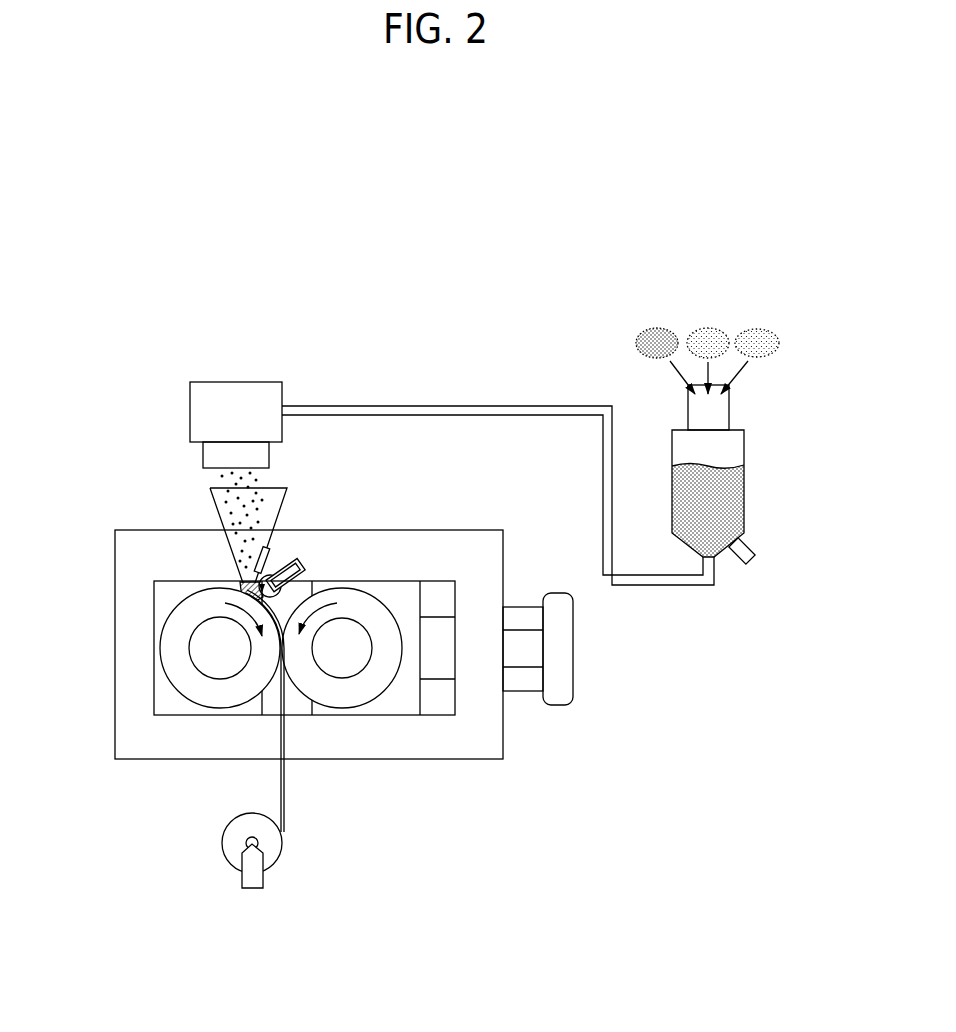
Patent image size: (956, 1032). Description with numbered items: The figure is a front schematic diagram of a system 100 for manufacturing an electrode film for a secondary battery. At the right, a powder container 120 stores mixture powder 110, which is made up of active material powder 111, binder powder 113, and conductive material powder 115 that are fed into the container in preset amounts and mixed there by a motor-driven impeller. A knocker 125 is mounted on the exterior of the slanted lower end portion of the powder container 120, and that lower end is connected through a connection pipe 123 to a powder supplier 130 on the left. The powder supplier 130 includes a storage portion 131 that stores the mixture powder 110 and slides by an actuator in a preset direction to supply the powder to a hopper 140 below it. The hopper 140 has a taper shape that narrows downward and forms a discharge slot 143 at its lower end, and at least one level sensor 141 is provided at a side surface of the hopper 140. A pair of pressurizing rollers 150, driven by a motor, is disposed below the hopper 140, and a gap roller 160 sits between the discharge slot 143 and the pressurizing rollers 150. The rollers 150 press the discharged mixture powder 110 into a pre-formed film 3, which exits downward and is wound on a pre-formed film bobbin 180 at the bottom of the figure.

The system for manufacturing an electrode film 100 is at (259, 225).
The powder supplier 130 is at (200, 367).
The storage portion 131 is at (192, 410).
The mixture powder 110 is at (216, 474).
The hopper 140 is at (275, 501).
The level sensor 141 is at (270, 558).
The discharge slot 143 is at (233, 600).
The gap roller 160 is at (304, 574).
The pair of pressurizing rollers 150 is at (365, 690).
The pre-formed film 3 is at (286, 788).
The pre-formed film bobbin 180 is at (253, 880).
The connection pipe 123 is at (408, 405).
The powder container 120 is at (745, 441).
The active material powder 111 is at (658, 325).
The binder powder 113 is at (707, 325).
The conductive material powder 115 is at (755, 326).
The knocker 125 is at (756, 547).